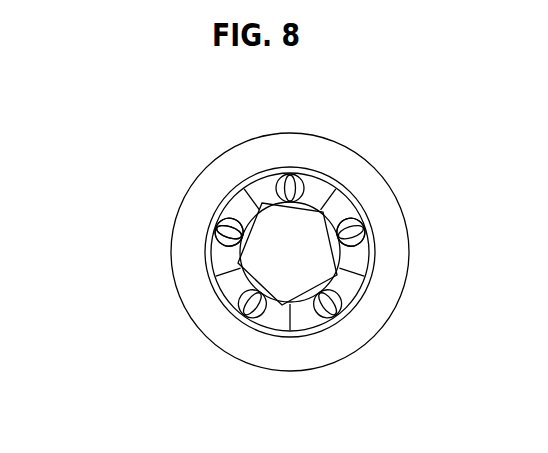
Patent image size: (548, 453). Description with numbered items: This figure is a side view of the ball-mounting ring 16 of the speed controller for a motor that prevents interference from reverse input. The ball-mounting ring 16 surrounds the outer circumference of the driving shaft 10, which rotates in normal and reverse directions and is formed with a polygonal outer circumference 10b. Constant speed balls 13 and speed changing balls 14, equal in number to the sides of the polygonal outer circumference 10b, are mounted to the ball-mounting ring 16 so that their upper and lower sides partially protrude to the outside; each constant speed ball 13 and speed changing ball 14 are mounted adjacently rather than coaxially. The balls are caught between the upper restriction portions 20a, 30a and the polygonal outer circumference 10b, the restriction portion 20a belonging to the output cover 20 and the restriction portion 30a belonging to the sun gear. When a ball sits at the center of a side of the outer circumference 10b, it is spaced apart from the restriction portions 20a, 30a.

The driving shaft 10 is at (313, 270).
The polygonal outer circumference 10b is at (335, 186).
The constant speed balls 13 is at (242, 190).
The speed changing balls 14 is at (312, 166).
The ball-mounting ring 16 is at (290, 325).
The output cover 20 is at (202, 337).
The restriction portion of output cover 20a is at (208, 274).
The restriction portion of sun gear 30a is at (229, 232).